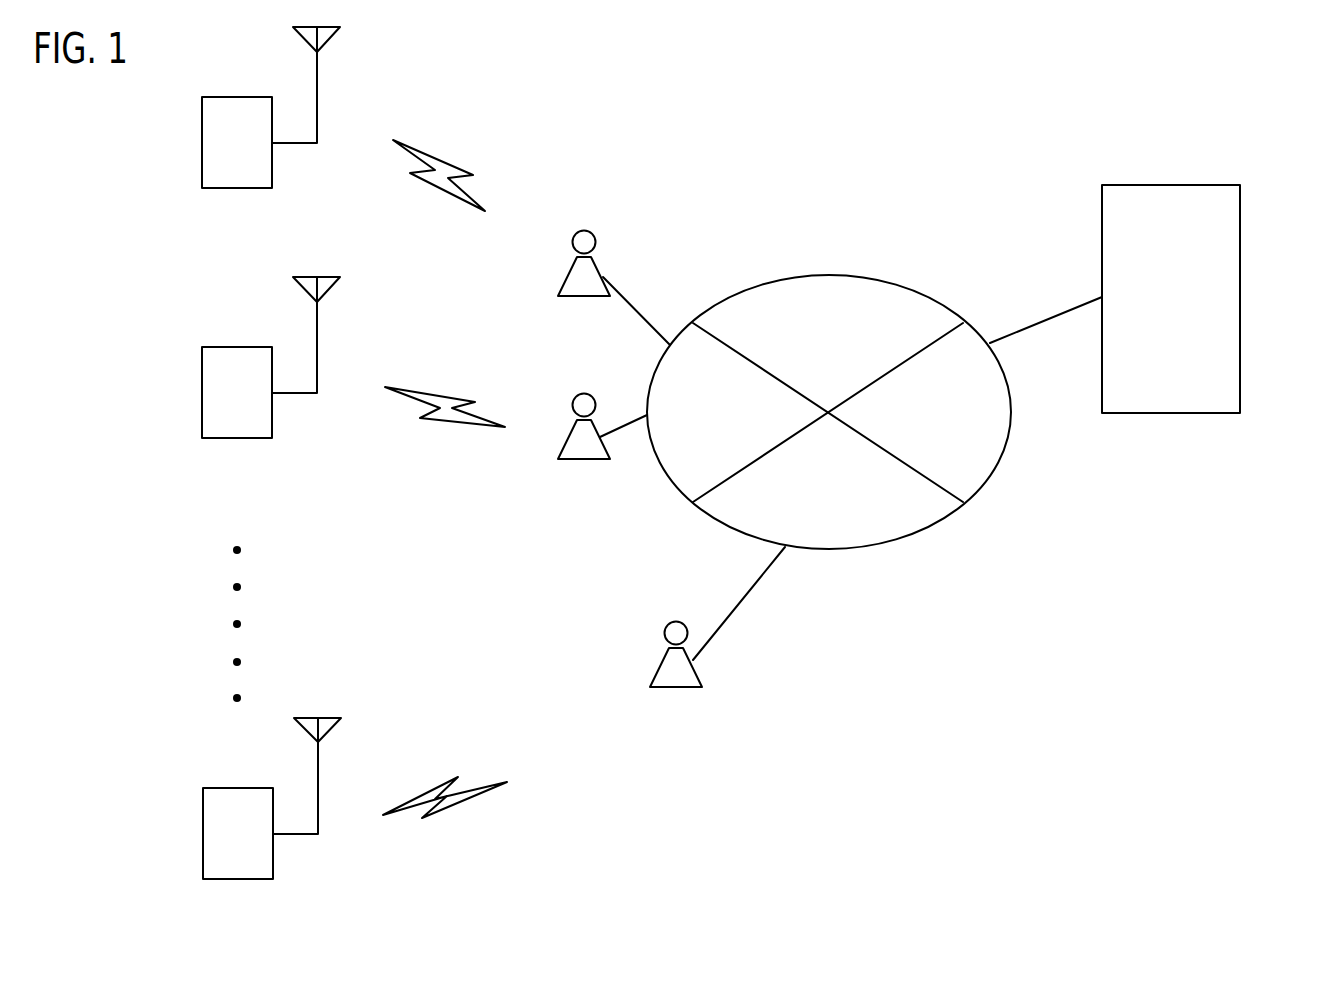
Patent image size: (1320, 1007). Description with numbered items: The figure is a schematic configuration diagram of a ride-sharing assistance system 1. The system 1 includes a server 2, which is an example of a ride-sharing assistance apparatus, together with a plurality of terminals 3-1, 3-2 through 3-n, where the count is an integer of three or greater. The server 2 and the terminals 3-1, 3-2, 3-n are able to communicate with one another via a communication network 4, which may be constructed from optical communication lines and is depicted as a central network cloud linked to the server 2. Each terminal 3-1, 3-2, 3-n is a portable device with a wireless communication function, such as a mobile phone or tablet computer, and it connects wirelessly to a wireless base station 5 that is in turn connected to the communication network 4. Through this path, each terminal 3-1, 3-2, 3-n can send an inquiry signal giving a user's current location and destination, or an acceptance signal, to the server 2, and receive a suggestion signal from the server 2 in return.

The ride-sharing assistance system 1 is at (1205, 848).
The server 2 is at (1240, 365).
The terminal 3-1 is at (225, 188).
The terminal 3-2 is at (225, 438).
The terminal 3-n is at (228, 879).
The communication network 4 is at (878, 545).
The wireless base station 5 is at (597, 262).